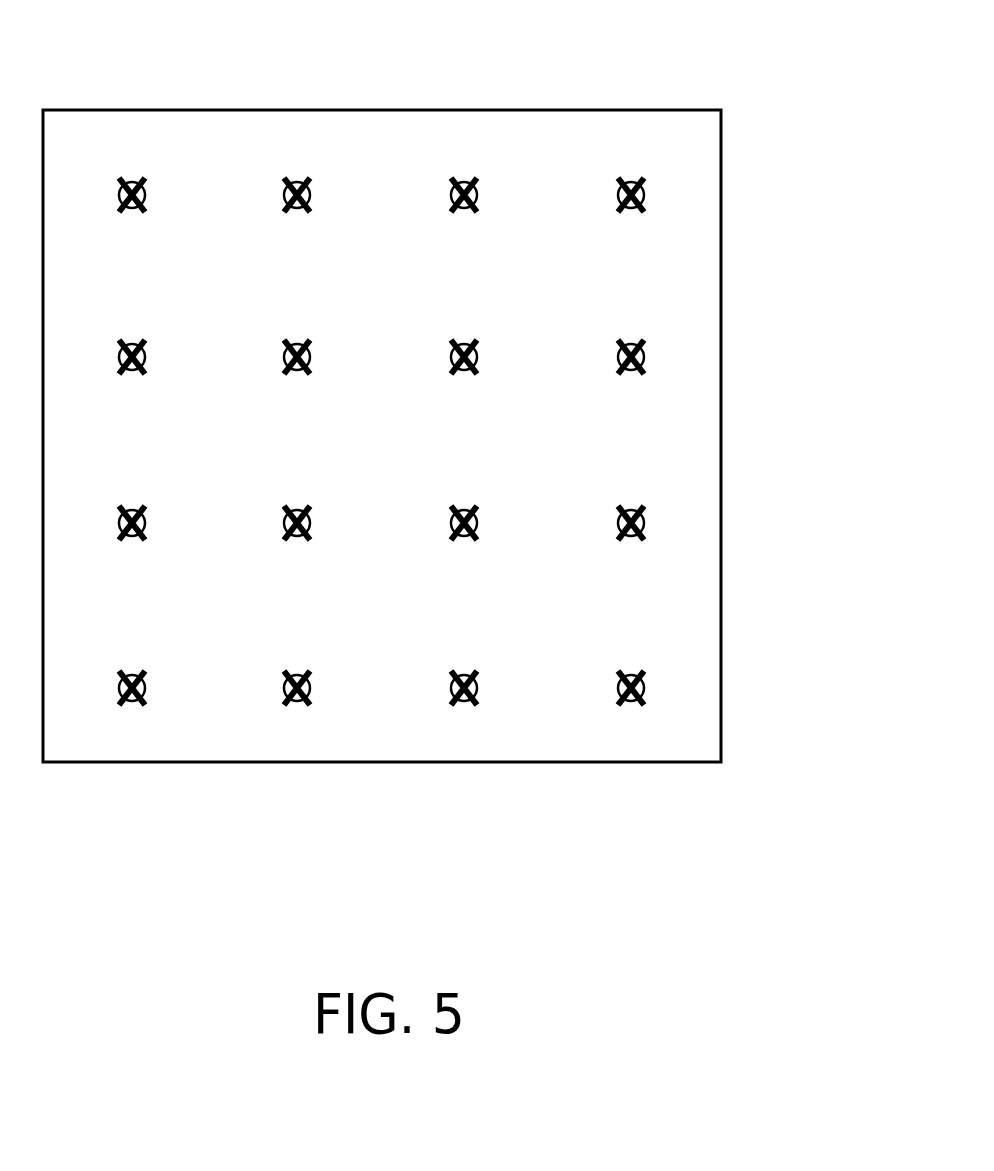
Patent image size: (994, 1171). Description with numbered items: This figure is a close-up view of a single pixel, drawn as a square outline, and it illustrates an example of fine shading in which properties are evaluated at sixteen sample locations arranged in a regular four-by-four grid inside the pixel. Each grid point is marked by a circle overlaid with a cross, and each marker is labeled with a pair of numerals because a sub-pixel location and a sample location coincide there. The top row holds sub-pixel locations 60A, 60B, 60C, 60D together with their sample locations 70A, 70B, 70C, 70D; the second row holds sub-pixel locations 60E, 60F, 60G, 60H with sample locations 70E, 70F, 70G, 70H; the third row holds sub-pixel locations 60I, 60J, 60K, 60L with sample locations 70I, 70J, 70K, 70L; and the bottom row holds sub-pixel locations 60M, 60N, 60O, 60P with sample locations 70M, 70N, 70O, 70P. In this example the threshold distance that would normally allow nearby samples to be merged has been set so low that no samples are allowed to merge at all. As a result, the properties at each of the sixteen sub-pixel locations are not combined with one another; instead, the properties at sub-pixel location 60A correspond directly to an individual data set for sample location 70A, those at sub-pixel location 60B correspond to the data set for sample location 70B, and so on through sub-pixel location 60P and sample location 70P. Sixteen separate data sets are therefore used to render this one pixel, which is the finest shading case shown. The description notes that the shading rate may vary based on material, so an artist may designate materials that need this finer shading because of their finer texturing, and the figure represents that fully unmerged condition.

The sub-pixel location 60A is at (140, 127).
The sample location 70A is at (130, 178).
The sub-pixel location 60B is at (305, 110).
The sample location 70B is at (296, 178).
The sub-pixel location 60C is at (465, 128).
The sample location 70C is at (462, 178).
The sub-pixel location 60D is at (639, 110).
The sample location 70D is at (628, 178).
The sub-pixel location 60E is at (207, 385).
The sample location 70E is at (134, 378).
The sub-pixel location 60F is at (371, 331).
The sample location 70F is at (297, 338).
The sub-pixel location 60G is at (544, 385).
The sample location 70G is at (465, 378).
The sub-pixel location 60H is at (756, 373).
The sample location 70H is at (641, 376).
The sub-pixel location 60I is at (202, 497).
The sample location 70I is at (134, 505).
The sub-pixel location 60J is at (362, 553).
The sample location 70J is at (297, 543).
The sub-pixel location 60K is at (540, 496).
The sample location 70K is at (465, 507).
The sub-pixel location 60L is at (748, 510).
The sample location 70L is at (645, 505).
The sub-pixel location 60M is at (141, 762).
The sample location 70M is at (132, 706).
The sub-pixel location 60N is at (306, 776).
The sample location 70N is at (297, 706).
The sub-pixel location 60O is at (471, 762).
The sample location 70O is at (464, 706).
The sub-pixel location 60P is at (633, 776).
The sample location 70P is at (631, 706).